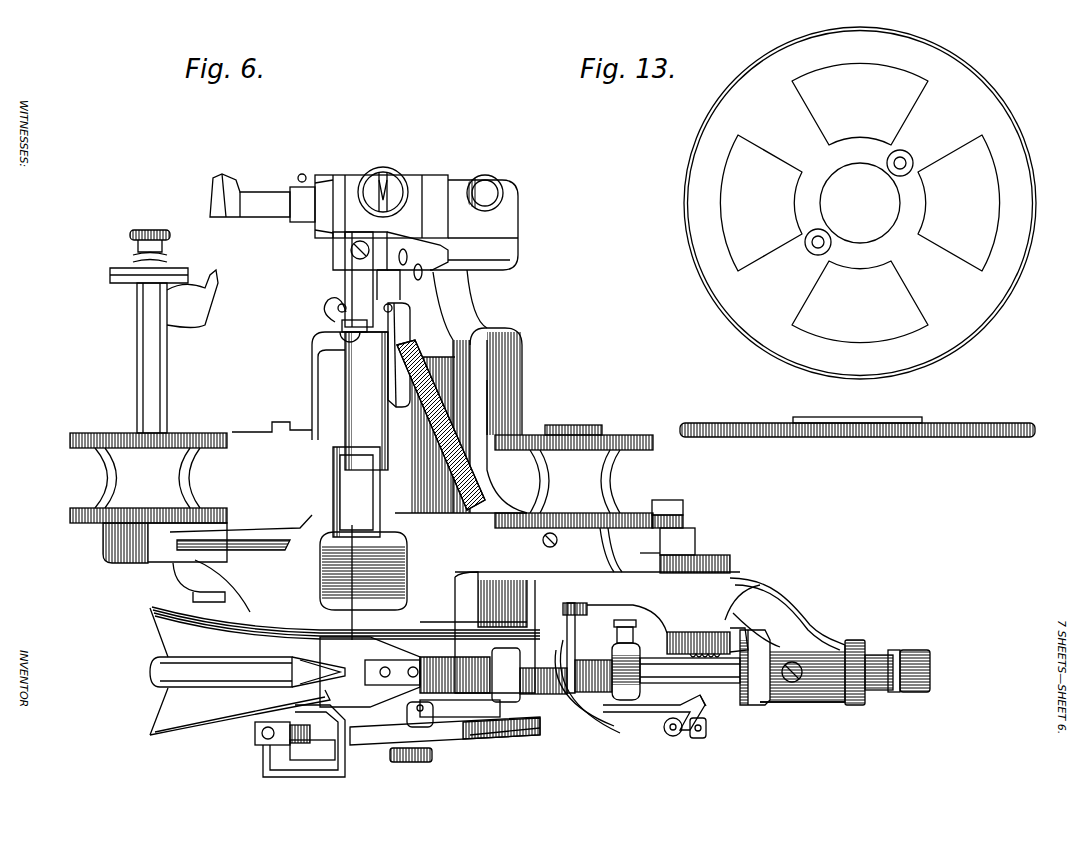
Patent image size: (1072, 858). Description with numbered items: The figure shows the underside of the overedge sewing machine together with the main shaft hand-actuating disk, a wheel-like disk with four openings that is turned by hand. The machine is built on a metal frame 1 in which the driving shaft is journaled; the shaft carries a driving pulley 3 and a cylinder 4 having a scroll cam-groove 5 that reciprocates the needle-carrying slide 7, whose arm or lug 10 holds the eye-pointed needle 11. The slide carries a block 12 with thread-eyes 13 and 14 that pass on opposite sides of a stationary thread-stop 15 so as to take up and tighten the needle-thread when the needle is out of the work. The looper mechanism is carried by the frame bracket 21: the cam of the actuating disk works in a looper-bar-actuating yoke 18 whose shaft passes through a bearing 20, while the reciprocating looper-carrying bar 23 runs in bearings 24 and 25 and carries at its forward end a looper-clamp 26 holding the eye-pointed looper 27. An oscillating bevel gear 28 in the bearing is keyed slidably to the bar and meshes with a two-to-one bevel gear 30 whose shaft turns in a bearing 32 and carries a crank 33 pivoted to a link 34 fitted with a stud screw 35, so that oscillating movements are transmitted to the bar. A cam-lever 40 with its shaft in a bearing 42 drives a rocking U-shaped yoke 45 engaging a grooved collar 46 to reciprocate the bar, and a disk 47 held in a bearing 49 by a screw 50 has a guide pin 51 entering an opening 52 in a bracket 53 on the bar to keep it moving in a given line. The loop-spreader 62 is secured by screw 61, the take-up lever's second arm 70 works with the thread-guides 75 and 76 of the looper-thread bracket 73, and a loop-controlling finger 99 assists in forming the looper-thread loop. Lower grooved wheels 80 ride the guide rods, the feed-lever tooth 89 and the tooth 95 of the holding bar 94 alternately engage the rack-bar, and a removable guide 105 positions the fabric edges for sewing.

The metal frame 1 is at (348, 432).
The driving pulley 3 is at (322, 570).
The cylinder 4 is at (465, 378).
The scroll cam-groove 5 is at (475, 480).
The needle-carrying slide 7 is at (366, 401).
The arm or lug 10 is at (333, 510).
The eye-pointed needle 11 is at (350, 615).
The block 12 is at (335, 332).
The thread-eye 13 is at (410, 320).
The thread-eye 14 is at (346, 312).
The stationary thread-stop 15 is at (362, 328).
The looper-bar-actuating yoke 18 is at (370, 748).
The bearing 20 is at (535, 690).
The frame bracket 21 is at (805, 630).
The looper-carrying bar 23 is at (718, 684).
The bearing 24 is at (785, 705).
The bearing 25 is at (568, 666).
The looper-clamp 26 is at (472, 737).
The eye-pointed looper 27 is at (384, 714).
The oscillating bevel gear 28 is at (752, 704).
The bevel gear 30 is at (705, 648).
The bearing 32 is at (708, 575).
The crank 33 is at (731, 564).
The link 34 is at (696, 545).
The stud screw 35 is at (668, 500).
The cam-lever 40 is at (445, 755).
The bearing 42 is at (605, 735).
The rocking U-shaped yoke 45 is at (636, 630).
The grooved collar 46 is at (645, 686).
The disk 47 is at (852, 706).
The bearing 49 is at (807, 676).
The screw 50 is at (792, 684).
The guide pin 51 is at (872, 692).
The opening 52 is at (894, 694).
The bracket 53 is at (922, 690).
The screw 61 is at (312, 753).
The loop-spreader 62 is at (304, 741).
The second arm 70 is at (645, 714).
The looper-thread bracket 73 is at (699, 704).
The thread-guide 75 is at (706, 730).
The thread-guide 76 is at (673, 737).
The lower grooved wheel 80 is at (97, 430).
The tooth 89 is at (379, 172).
The holding bar 94 is at (519, 242).
The tooth 95 is at (474, 177).
The loop-controlling finger 99 is at (325, 680).
The guide 105 is at (165, 710).